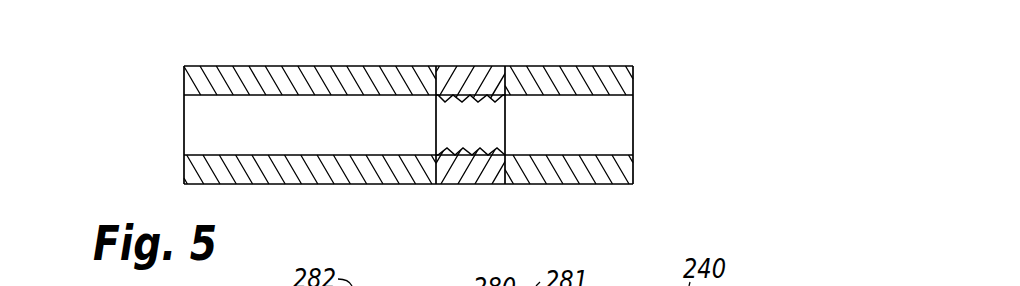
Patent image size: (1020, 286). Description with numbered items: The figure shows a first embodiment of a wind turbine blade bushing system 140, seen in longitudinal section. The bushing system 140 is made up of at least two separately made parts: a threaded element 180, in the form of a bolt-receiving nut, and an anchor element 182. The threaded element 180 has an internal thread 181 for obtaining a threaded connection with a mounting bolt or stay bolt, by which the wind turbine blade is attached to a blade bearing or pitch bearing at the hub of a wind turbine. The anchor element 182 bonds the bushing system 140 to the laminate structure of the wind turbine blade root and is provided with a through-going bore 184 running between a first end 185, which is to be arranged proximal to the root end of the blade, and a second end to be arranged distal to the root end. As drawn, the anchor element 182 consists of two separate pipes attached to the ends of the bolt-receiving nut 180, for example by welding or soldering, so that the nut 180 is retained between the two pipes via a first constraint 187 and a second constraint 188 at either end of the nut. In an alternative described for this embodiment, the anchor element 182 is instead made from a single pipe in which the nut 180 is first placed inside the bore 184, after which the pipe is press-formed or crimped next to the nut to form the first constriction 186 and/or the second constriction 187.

The bushing system 140 is at (668, 53).
The threaded element 180 is at (491, 128).
The internal thread 181 is at (489, 97).
The anchor element 182 is at (357, 58).
The through-going bore 184 is at (197, 122).
The first end 185 is at (184, 150).
The first constriction 186 is at (633, 143).
The first constraint 187 is at (441, 184).
The second constraint 188 is at (503, 178).